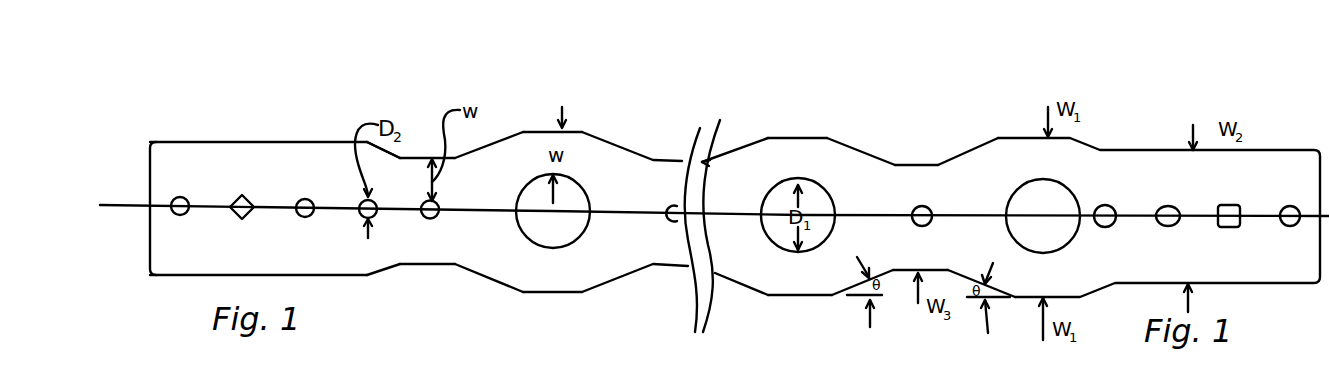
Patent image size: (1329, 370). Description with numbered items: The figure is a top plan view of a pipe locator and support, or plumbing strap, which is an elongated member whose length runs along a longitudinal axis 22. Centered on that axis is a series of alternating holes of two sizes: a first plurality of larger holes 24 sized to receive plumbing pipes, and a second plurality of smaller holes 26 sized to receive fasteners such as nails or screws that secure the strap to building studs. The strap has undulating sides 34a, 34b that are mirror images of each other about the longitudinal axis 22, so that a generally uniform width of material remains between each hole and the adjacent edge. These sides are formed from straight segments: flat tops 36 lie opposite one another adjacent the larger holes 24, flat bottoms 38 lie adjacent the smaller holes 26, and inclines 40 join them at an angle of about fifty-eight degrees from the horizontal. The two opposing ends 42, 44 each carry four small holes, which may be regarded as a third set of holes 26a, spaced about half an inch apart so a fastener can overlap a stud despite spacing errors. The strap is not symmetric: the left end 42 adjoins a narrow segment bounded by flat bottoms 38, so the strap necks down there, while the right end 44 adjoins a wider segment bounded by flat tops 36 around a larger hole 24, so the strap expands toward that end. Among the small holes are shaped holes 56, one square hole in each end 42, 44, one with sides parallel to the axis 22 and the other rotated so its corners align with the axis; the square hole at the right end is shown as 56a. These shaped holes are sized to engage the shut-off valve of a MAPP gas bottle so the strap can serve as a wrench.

The longitudinal axis 22 is at (113, 205).
The first plurality of holes 24 is at (584, 200).
The second plurality of smaller holes 26 is at (439, 206).
The third set of holes 26a is at (181, 216).
The undulating side 34a is at (248, 142).
The undulating side 34b is at (332, 282).
The flat tops 36 is at (553, 296).
The flat bottoms 38 is at (430, 266).
The inclines 40 is at (507, 290).
The left end 42 is at (165, 108).
The right end 44 is at (1302, 118).
The shaped hole 56 is at (242, 196).
The square-shaped aperture 56a is at (1230, 227).